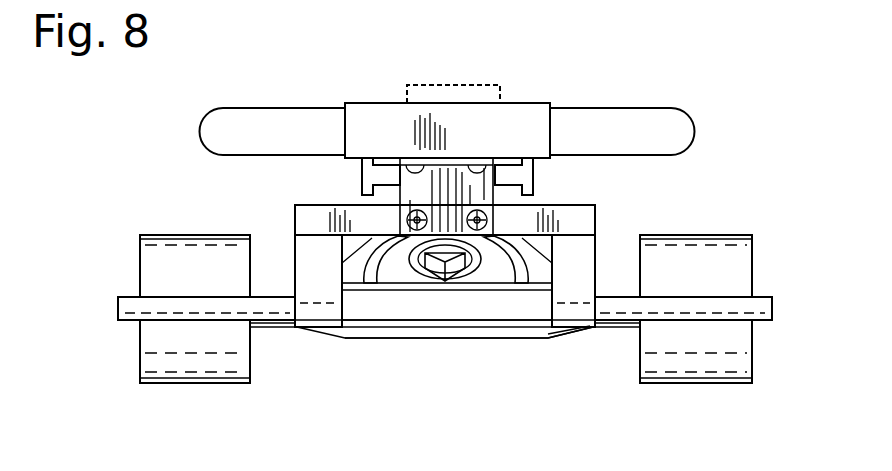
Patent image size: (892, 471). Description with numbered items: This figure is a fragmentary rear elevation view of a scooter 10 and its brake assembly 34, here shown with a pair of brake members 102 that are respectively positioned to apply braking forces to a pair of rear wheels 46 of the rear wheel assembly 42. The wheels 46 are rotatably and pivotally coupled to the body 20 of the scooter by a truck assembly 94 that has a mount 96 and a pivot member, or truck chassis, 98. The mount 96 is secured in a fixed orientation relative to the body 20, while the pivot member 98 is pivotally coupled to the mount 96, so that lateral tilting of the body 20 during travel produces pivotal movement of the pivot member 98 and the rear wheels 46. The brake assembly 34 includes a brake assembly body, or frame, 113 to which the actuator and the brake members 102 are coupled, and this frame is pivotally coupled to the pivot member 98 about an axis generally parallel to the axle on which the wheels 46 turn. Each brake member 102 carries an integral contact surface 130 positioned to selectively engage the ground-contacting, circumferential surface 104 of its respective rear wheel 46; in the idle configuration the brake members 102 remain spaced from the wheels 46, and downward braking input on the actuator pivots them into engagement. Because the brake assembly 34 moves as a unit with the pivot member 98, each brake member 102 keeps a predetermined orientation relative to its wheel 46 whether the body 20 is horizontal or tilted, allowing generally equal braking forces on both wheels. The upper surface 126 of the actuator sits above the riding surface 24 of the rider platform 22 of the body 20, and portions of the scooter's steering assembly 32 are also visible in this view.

The scooter 10 is at (772, 80).
The body 20 is at (701, 77).
The rider platform 22 is at (641, 98).
The riding surface 24 is at (578, 108).
The steering assembly 32 is at (404, 94).
The brake assembly 34 is at (378, 378).
The rear wheel assembly 42 is at (126, 358).
The wheels 46 is at (164, 388).
The truck assembly 94 is at (432, 342).
The mount 96 is at (534, 178).
The pivot member 98 is at (470, 340).
The brake member 102 is at (116, 306).
The ground-contacting surface 104 is at (198, 385).
The brake assembly body 113 is at (576, 342).
The upper surface 126 is at (508, 103).
The contact surface 130 is at (168, 297).